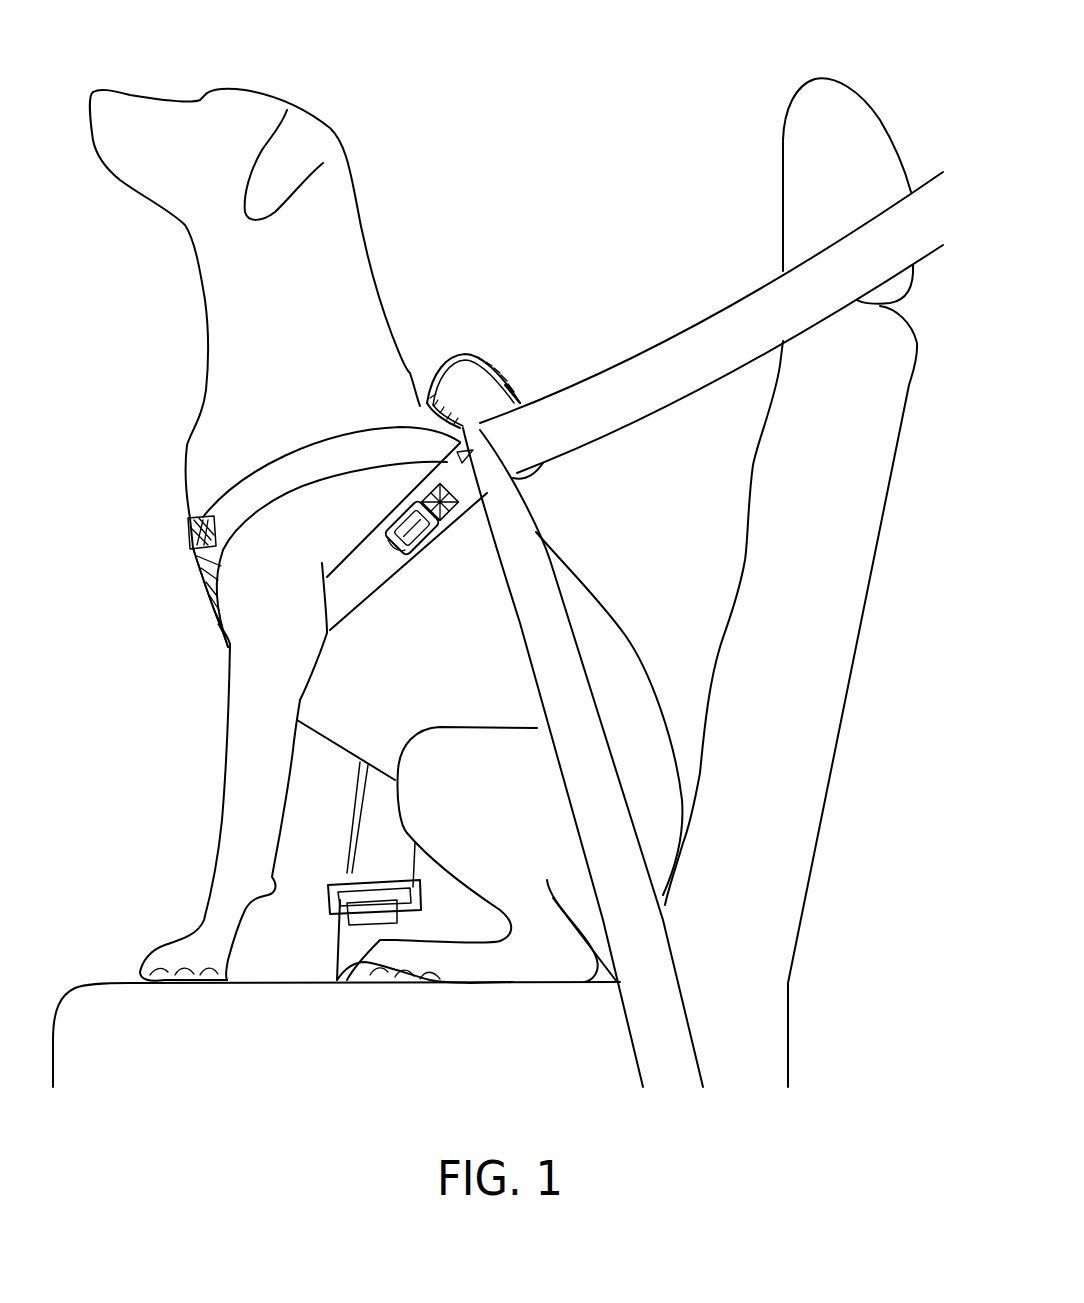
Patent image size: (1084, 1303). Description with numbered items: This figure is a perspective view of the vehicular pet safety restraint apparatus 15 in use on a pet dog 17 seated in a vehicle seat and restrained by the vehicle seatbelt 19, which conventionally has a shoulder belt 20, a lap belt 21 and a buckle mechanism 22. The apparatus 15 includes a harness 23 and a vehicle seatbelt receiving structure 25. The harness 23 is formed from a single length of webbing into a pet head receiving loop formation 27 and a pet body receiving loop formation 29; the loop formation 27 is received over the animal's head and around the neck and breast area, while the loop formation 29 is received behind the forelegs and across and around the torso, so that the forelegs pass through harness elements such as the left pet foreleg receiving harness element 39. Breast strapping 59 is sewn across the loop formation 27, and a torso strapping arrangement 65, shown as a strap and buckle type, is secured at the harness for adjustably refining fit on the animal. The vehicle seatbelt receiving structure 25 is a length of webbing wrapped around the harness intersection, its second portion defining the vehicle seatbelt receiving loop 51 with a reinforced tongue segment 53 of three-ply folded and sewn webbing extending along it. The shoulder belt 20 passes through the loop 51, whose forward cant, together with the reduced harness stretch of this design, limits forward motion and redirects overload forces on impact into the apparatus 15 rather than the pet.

The vehicular safety restraint apparatus 15 is at (319, 608).
The pet dog 17 is at (333, 197).
The vehicle seatbelt 19 is at (770, 320).
The shoulder belt 20 is at (640, 410).
The lap belt 21 is at (552, 642).
The buckle mechanism 22 is at (353, 928).
The harness 23 is at (262, 482).
The vehicle seatbelt receiving structure 25 is at (482, 360).
The pet head receiving loop formation 27 is at (203, 600).
The pet body receiving loop formation 29 is at (485, 522).
The left pet foreleg receiving harness element 39 is at (402, 487).
The vehicle seatbelt receiving loop 51 is at (520, 393).
The reinforced tongue segment 53 is at (442, 407).
The breast strapping 59 is at (190, 533).
The torso strapping arrangement 65 is at (367, 570).